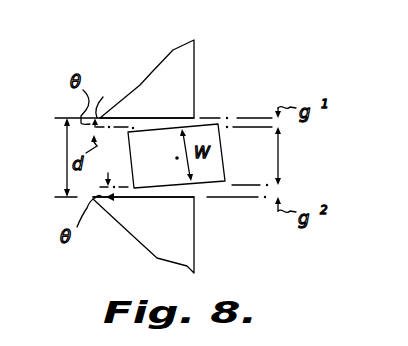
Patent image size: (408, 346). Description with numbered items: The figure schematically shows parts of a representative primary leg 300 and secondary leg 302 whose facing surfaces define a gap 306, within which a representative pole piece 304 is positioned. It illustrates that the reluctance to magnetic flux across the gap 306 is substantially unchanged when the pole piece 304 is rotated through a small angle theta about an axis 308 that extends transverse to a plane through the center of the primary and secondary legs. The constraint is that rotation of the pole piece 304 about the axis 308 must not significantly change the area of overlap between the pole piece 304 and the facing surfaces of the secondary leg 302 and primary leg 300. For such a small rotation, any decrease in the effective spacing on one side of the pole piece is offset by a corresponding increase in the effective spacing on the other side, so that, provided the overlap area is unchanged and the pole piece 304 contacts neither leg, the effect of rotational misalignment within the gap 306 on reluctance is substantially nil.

The primary leg 300 is at (185, 250).
The secondary leg 302 is at (188, 65).
The pole piece 304 is at (213, 163).
The gap 306 is at (133, 115).
The axis 308 is at (178, 157).